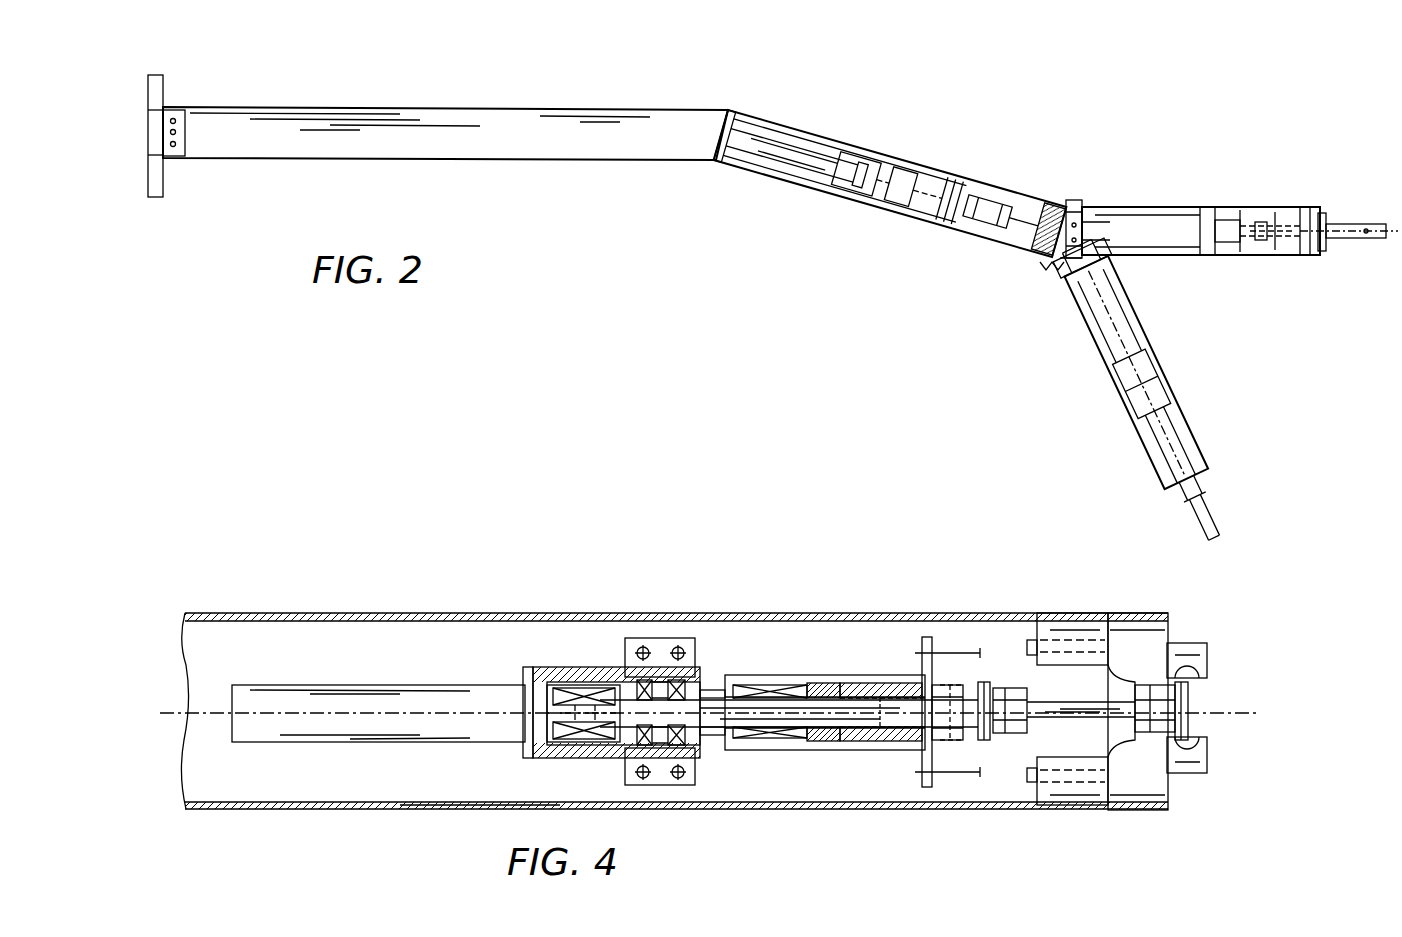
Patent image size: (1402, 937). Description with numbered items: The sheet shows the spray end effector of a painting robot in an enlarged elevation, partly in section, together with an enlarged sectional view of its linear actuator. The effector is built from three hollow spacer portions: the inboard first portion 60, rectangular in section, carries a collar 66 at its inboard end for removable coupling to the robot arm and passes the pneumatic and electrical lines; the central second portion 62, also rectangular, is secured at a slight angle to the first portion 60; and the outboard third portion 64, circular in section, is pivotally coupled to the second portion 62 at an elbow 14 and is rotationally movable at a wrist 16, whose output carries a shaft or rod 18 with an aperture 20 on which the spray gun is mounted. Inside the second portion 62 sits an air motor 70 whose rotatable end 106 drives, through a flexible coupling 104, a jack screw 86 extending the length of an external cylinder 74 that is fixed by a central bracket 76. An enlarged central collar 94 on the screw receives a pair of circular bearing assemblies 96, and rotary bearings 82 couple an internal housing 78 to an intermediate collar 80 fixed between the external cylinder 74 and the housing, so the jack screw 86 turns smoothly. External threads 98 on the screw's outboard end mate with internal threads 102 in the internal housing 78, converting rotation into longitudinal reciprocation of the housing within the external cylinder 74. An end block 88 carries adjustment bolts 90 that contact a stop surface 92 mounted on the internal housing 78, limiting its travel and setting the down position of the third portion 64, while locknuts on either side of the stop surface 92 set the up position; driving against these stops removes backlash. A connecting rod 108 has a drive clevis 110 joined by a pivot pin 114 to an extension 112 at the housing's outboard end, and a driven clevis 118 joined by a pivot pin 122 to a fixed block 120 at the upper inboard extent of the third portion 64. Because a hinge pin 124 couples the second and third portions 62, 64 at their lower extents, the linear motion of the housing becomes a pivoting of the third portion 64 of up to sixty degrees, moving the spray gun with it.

In FIG. 2, the elbow 14 is at (1080, 204).
In FIG. 2, the wrist 16 is at (1322, 213).
In FIG. 2, the shaft or rod 18 is at (1355, 224).
In FIG. 2, the aperture 20 is at (1366, 238).
In FIG. 2, the inboard or first portion 60 is at (322, 107).
In FIG. 2, the central or second portion 62 is at (810, 135).
In FIG. 4, the central or second portion 62 is at (387, 615).
In FIG. 2, the outboard or third portion 64 is at (1165, 207).
In FIG. 2, the collar 66 is at (148, 168).
In FIG. 2, the air motor 70 is at (748, 130).
In FIG. 4, the air motor 70 is at (260, 695).
In FIG. 4, the external cylinder 74 is at (560, 690).
In FIG. 4, the central bracket 76 is at (625, 645).
In FIG. 4, the internal housing 78 is at (825, 690).
In FIG. 4, the intermediate collar 80 is at (742, 690).
In FIG. 4, the rotary bearings 82 is at (790, 690).
In FIG. 4, the jack screw 86 is at (770, 728).
In FIG. 4, the end block 88 is at (1072, 630).
In FIG. 4, the adjustment bolts 90 is at (1020, 650).
In FIG. 4, the stop surface 92 is at (928, 660).
In FIG. 4, the enlarged central collar 94 is at (650, 680).
In FIG. 4, the circular bearing assemblies 96 is at (590, 683).
In FIG. 4, the external threads 98 is at (868, 745).
In FIG. 4, the internal threads 102 is at (820, 750).
In FIG. 4, the flexible coupling 104 is at (520, 690).
In FIG. 4, the rotatable end 106 is at (480, 810).
In FIG. 4, the connecting rod 108 is at (1150, 690).
In FIG. 4, the drive clevis 110 is at (1012, 740).
In FIG. 4, the extension 112 is at (972, 775).
In FIG. 4, the pivot pin 114 is at (990, 740).
In FIG. 4, the driven clevis 118 is at (1130, 735).
In FIG. 4, the fixed block 120 is at (1207, 755).
In FIG. 4, the pivot pin 122 is at (1160, 740).
In FIG. 2, the hinge pin 124 is at (1040, 262).